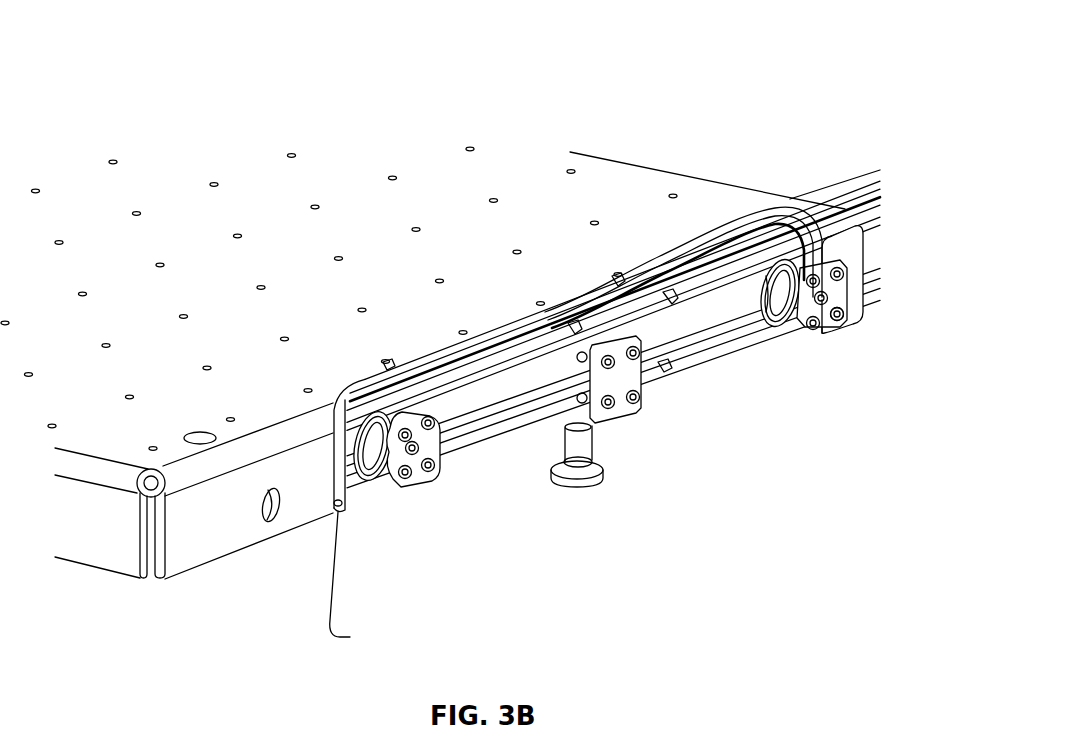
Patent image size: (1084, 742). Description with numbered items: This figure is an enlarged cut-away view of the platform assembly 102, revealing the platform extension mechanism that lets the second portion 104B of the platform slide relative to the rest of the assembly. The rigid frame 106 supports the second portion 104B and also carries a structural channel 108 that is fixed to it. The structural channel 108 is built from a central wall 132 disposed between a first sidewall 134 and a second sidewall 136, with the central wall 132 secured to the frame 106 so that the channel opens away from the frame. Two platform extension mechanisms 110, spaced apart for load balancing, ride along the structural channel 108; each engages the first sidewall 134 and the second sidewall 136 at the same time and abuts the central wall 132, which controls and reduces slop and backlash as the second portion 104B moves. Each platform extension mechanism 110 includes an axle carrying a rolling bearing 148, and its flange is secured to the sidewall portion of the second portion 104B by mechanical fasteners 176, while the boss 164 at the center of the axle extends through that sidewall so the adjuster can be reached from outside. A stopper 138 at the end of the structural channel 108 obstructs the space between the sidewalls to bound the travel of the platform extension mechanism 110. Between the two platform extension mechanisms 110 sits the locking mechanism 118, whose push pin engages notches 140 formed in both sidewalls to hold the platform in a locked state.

The platform assembly 102 is at (646, 339).
The second portion 104B is at (270, 203).
The frame 106 is at (845, 208).
The structural channel 108 is at (607, 407).
The platform extension mechanism 110 is at (401, 506).
The locking mechanism 118 is at (610, 448).
The central wall 132 is at (458, 397).
The first sidewall 134 is at (435, 381).
The second sidewall 136 is at (482, 433).
The stopper 138 is at (359, 580).
The notch 140 is at (664, 292).
The rolling bearing 148 is at (766, 298).
The boss 164 is at (864, 312).
The mechanical fastener 176 is at (841, 321).